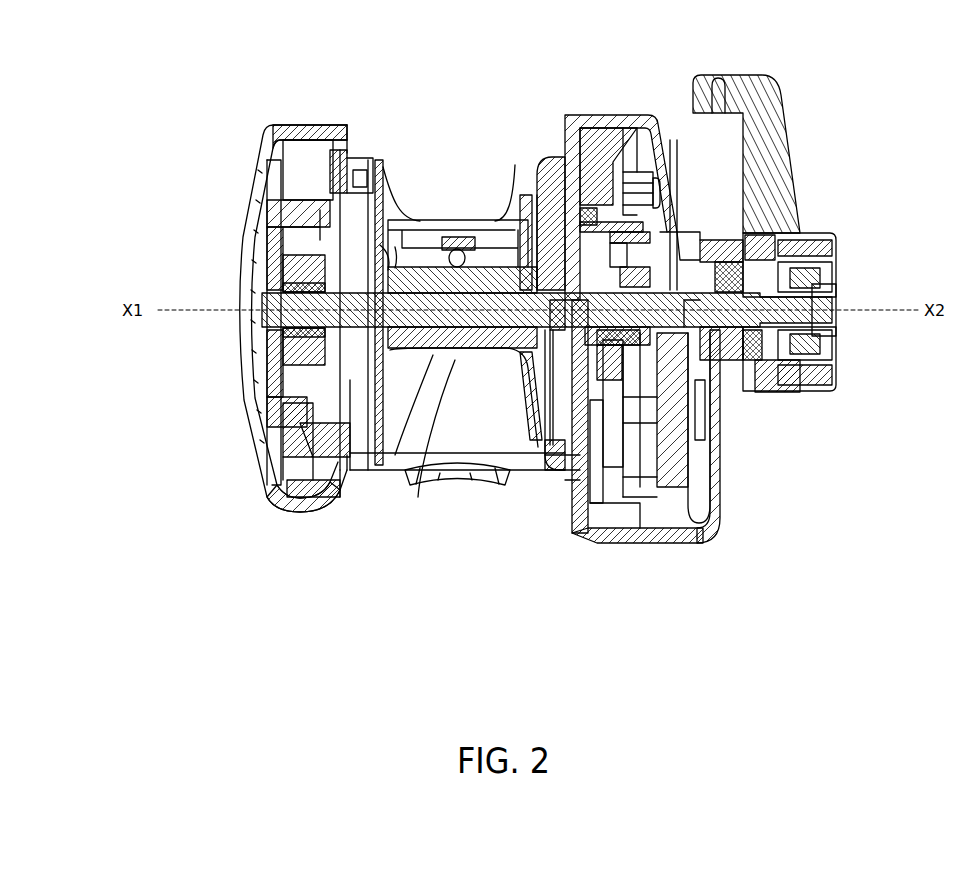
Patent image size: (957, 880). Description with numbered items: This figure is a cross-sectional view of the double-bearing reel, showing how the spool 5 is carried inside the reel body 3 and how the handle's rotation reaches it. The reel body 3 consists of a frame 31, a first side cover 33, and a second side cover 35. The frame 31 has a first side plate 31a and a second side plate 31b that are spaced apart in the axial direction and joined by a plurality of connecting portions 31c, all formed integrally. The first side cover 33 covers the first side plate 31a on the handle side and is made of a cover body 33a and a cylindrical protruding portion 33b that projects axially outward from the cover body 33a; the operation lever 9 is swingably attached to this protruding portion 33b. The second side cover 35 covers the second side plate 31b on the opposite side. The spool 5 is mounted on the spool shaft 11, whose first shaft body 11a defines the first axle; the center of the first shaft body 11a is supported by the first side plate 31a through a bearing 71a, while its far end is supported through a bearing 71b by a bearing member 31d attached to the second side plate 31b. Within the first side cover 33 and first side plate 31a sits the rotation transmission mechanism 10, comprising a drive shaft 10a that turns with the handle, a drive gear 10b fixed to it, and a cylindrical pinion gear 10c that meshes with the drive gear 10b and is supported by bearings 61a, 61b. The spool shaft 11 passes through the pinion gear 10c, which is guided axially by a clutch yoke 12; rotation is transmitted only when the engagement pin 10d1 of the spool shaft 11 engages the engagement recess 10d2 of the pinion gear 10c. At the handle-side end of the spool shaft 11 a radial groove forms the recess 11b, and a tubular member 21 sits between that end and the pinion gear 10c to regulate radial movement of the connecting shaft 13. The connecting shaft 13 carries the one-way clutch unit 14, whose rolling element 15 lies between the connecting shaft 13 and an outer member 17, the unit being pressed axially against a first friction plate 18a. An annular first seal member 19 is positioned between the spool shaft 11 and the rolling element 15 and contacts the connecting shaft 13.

The reel body 3 is at (290, 107).
The spool 5 is at (420, 258).
The operation lever 9 is at (785, 80).
The rotation transmission mechanism 10 is at (717, 530).
The drive shaft 10a is at (735, 420).
The drive gear 10b is at (660, 513).
The pinion gear 10c is at (722, 412).
The engagement pin 10d1 is at (460, 247).
The engagement recess 10d2 is at (492, 233).
The spool shaft 11 is at (383, 440).
The first shaft body 11a is at (427, 480).
The recess 11b is at (688, 240).
The clutch yoke 12 is at (560, 500).
The connecting shaft 13 is at (800, 393).
The one-way clutch unit 14 is at (837, 263).
The rolling element 15 is at (833, 350).
The outer member 17 is at (833, 370).
The first friction plate 18a is at (837, 297).
The first seal member 19 is at (753, 273).
The tubular member 21 is at (727, 370).
The frame 31 is at (578, 108).
The first side plate 31a is at (514, 240).
The second side plate 31b is at (365, 160).
The connecting portions 31c is at (531, 465).
The bearing member 31d is at (282, 474).
The first side cover 33 is at (648, 108).
The cover body 33a is at (676, 172).
The protruding portion 33b is at (712, 250).
The second side cover 35 is at (237, 180).
The bearing 61a is at (772, 385).
The bearing 61b is at (548, 400).
The bearing 71a is at (526, 352).
The bearing 71b is at (267, 363).